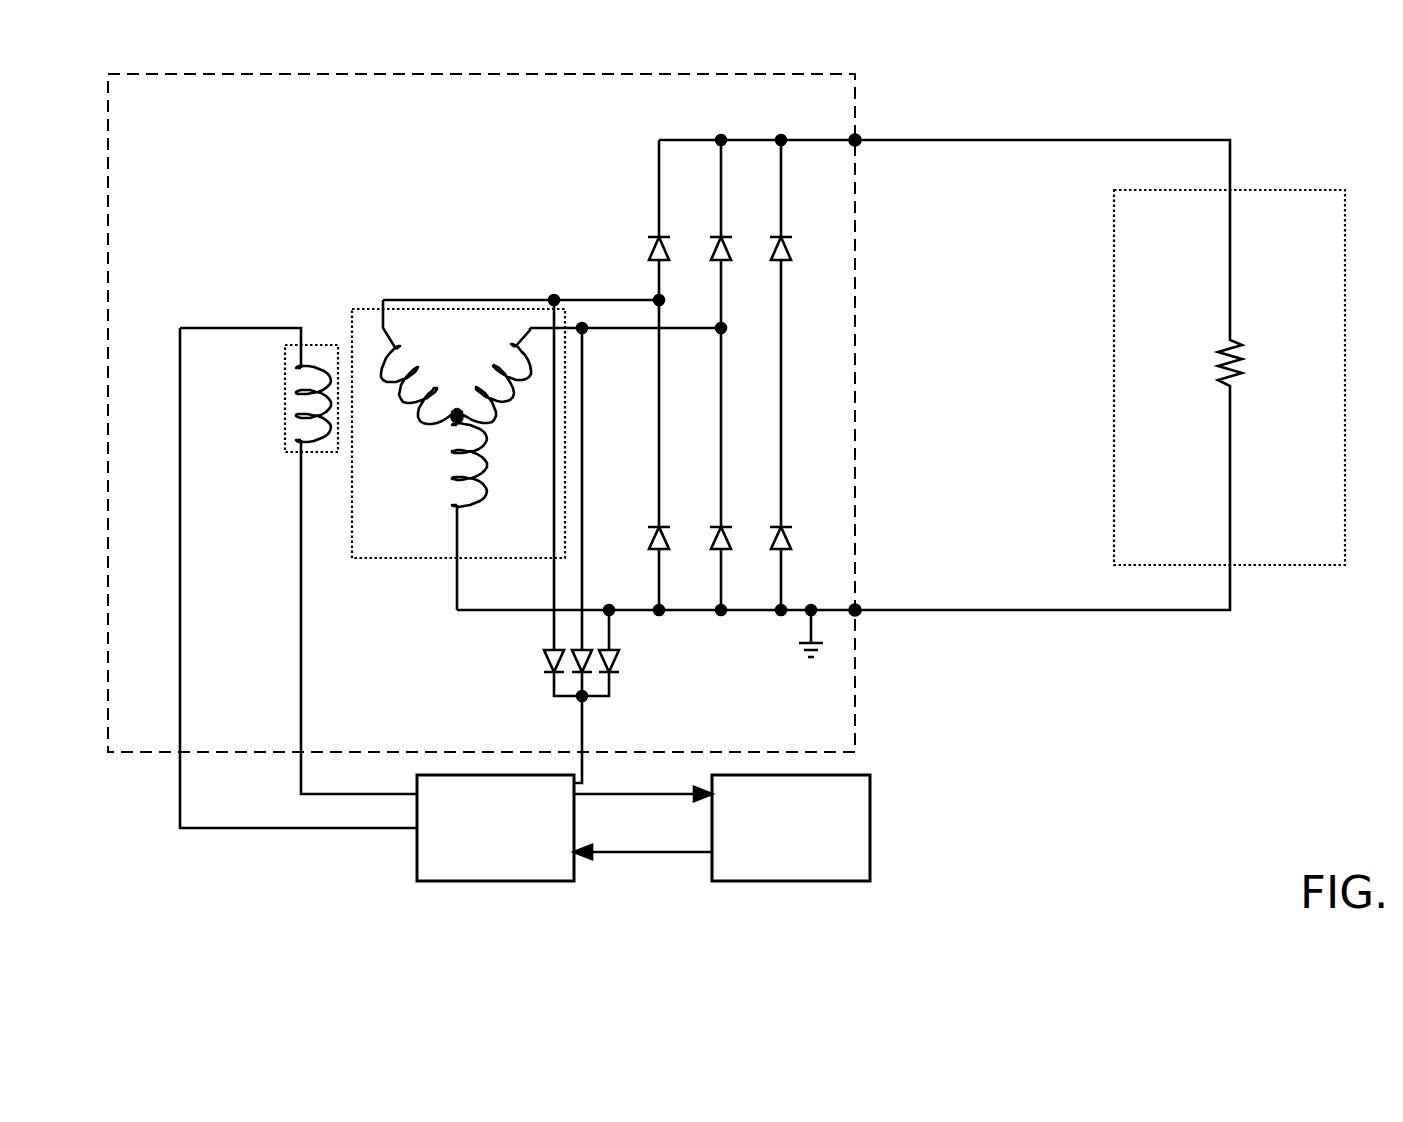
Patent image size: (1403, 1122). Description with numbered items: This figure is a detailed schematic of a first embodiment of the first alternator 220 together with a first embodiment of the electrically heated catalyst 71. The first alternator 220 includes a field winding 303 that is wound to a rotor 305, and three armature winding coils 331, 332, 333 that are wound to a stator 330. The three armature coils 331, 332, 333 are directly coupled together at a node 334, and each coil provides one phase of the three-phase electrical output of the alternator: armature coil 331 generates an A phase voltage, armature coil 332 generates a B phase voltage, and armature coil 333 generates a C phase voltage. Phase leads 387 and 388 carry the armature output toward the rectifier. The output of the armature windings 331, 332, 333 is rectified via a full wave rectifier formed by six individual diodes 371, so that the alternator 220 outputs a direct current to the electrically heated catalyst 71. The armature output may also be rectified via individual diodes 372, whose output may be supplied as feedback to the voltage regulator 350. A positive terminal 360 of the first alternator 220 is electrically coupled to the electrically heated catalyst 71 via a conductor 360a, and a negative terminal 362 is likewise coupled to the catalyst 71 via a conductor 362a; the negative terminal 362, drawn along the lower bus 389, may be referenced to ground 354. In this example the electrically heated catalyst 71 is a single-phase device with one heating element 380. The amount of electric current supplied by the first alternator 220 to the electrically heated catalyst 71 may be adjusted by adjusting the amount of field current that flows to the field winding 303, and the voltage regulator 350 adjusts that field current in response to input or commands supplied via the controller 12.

The first alternator 220 is at (122, 74).
The positive terminal 360 is at (853, 139).
The conductor 360a is at (955, 139).
The negative terminal 362 is at (853, 608).
The conductor 362a is at (983, 608).
The negative bus 389 is at (455, 613).
The heating element 380 is at (1237, 385).
The electrically heated catalyst 71 is at (1345, 565).
The diodes 371 is at (650, 261).
The diodes 372 is at (553, 671).
The first phase lead 387 is at (475, 300).
The second phase lead 388 is at (643, 333).
The ground 354 is at (802, 645).
The stator 330 is at (372, 560).
The armature coil 331 is at (418, 414).
The armature coil 332 is at (500, 368).
The armature coil 333 is at (453, 483).
The node 334 is at (454, 421).
The field winding 303 is at (303, 415).
The rotor 305 is at (330, 453).
The voltage regulator 350 is at (512, 859).
The controller 12 is at (801, 859).